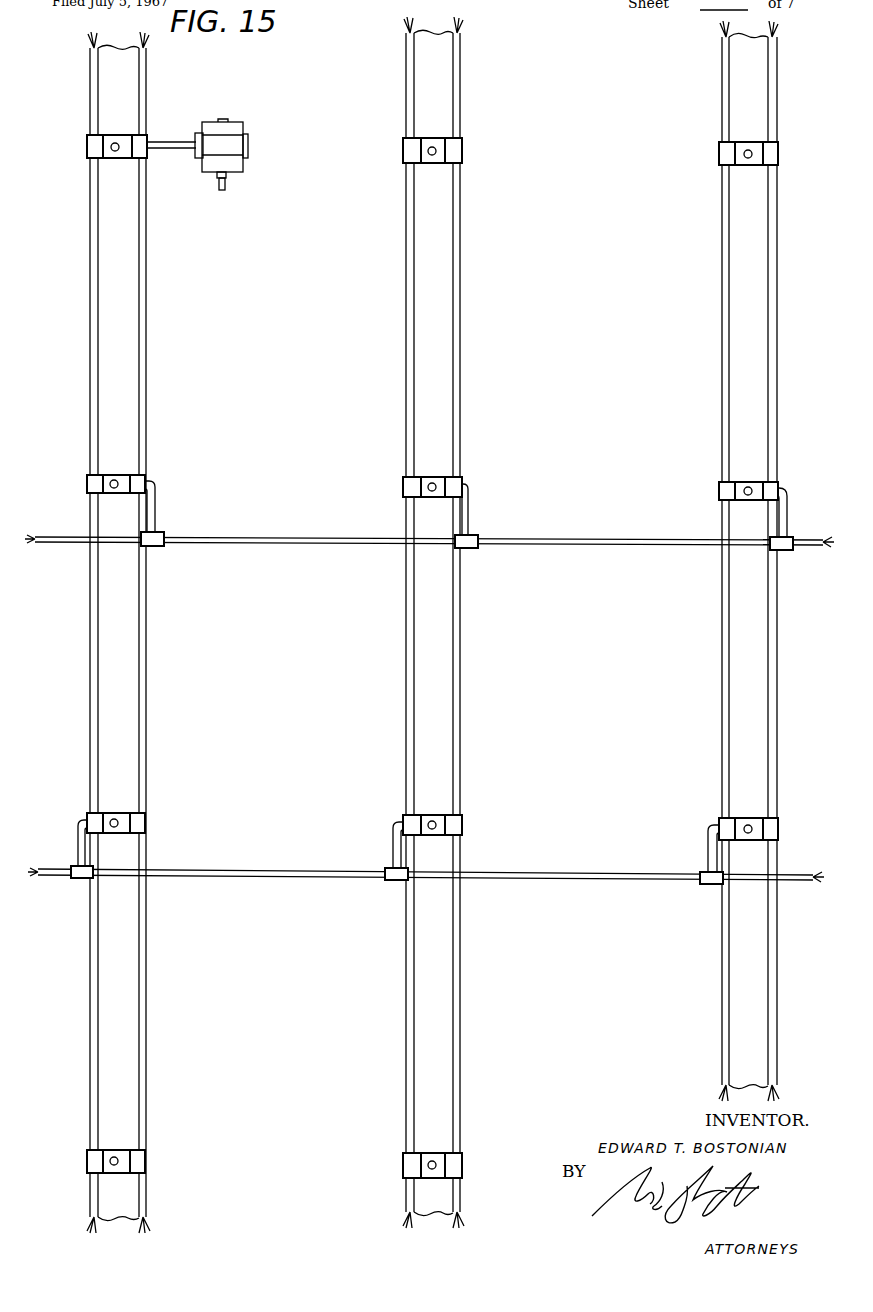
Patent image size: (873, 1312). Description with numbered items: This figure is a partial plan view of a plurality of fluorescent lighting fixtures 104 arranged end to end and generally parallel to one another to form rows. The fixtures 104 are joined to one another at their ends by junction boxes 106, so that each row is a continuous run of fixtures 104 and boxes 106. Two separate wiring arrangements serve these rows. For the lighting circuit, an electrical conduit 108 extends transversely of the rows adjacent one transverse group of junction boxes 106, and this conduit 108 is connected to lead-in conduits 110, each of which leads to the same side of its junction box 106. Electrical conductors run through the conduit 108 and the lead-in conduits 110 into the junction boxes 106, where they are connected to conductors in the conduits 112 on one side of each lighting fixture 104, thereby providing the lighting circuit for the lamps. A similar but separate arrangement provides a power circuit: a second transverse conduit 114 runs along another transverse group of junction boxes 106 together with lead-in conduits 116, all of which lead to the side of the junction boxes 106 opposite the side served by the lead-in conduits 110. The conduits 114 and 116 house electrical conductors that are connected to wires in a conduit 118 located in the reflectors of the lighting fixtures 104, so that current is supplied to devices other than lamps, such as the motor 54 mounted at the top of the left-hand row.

The motor 54 is at (240, 120).
The lighting fixture 104 is at (432, 625).
The junction box 106 is at (87, 478).
The electrical conduit 108 is at (225, 868).
The lead-in conduit 110 is at (78, 833).
The conduit 112 is at (90, 360).
The second transverse conduit 114 is at (225, 537).
The lead-in conduit 116 is at (156, 496).
The conduit 118 is at (147, 320).